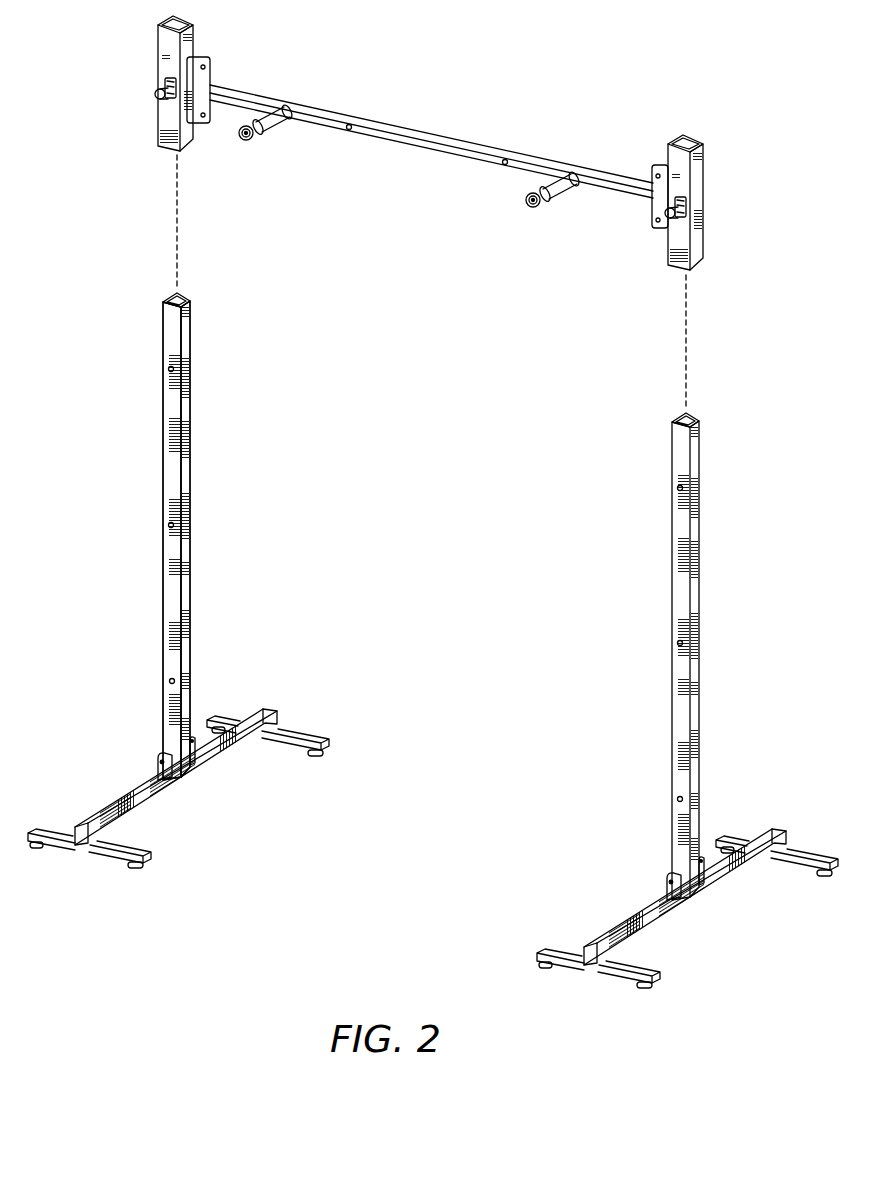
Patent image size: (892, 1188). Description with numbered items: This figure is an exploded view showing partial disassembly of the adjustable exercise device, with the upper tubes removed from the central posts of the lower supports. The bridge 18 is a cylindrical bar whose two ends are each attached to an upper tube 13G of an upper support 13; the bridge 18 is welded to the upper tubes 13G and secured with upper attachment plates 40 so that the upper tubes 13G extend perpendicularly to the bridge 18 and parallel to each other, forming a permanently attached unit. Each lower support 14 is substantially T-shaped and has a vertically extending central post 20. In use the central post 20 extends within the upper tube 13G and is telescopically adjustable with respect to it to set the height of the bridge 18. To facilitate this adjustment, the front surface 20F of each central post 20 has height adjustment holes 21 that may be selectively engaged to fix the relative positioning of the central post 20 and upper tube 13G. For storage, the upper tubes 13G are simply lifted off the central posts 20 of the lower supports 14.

The upper support 13 is at (159, 129).
The upper tube 13G is at (158, 43).
The upper attachment plate 40 is at (211, 71).
The bridge 18 is at (428, 133).
The central post 20 is at (192, 415).
The front surface 20F is at (173, 480).
The height adjustment hole 21 is at (168, 374).
The lower support 14 is at (192, 455).